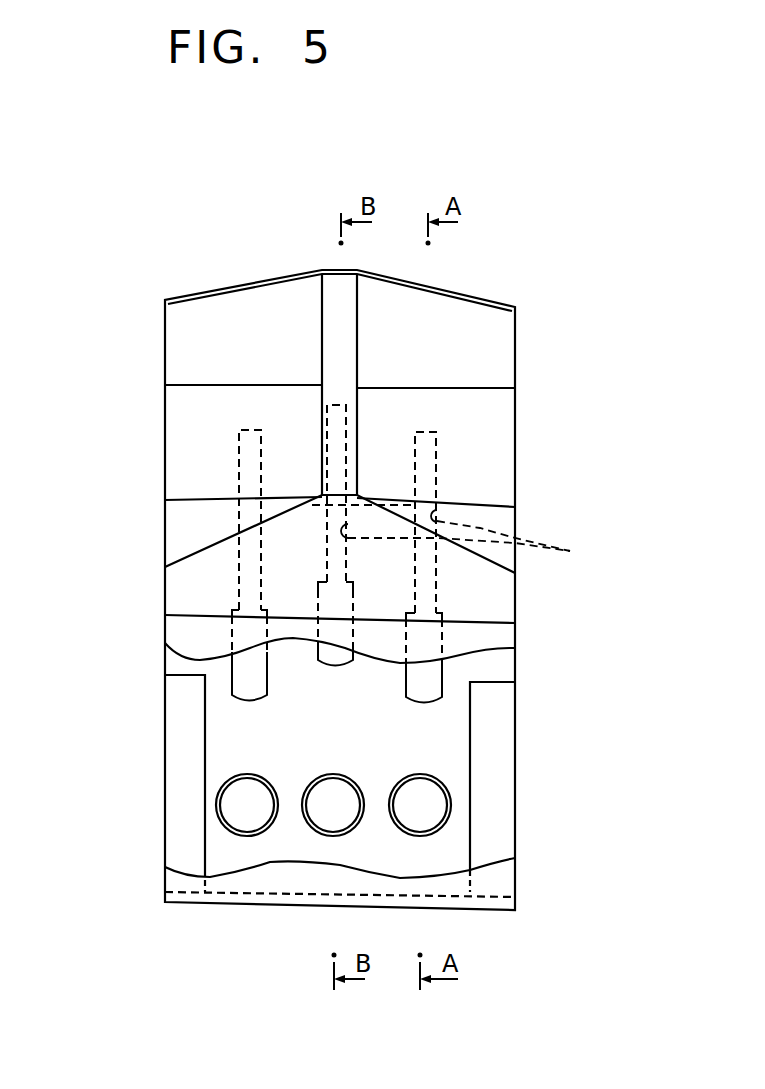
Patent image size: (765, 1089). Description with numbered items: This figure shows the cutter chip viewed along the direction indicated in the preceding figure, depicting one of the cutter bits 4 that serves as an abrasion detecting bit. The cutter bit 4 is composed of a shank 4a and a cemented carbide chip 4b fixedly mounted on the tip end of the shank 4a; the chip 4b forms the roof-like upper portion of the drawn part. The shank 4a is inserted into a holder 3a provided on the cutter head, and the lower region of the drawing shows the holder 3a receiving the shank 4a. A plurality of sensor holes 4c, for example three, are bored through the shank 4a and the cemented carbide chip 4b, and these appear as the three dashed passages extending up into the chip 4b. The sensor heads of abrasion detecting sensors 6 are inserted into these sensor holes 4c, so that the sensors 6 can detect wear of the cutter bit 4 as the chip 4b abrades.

The cutter bit 4 is at (65, 455).
The shank 4a is at (173, 527).
The cemented carbide chip 4b is at (173, 471).
The sensor holes 4c is at (461, 536).
The abrasion detecting sensors 6 is at (182, 600).
The holder 3a is at (225, 745).